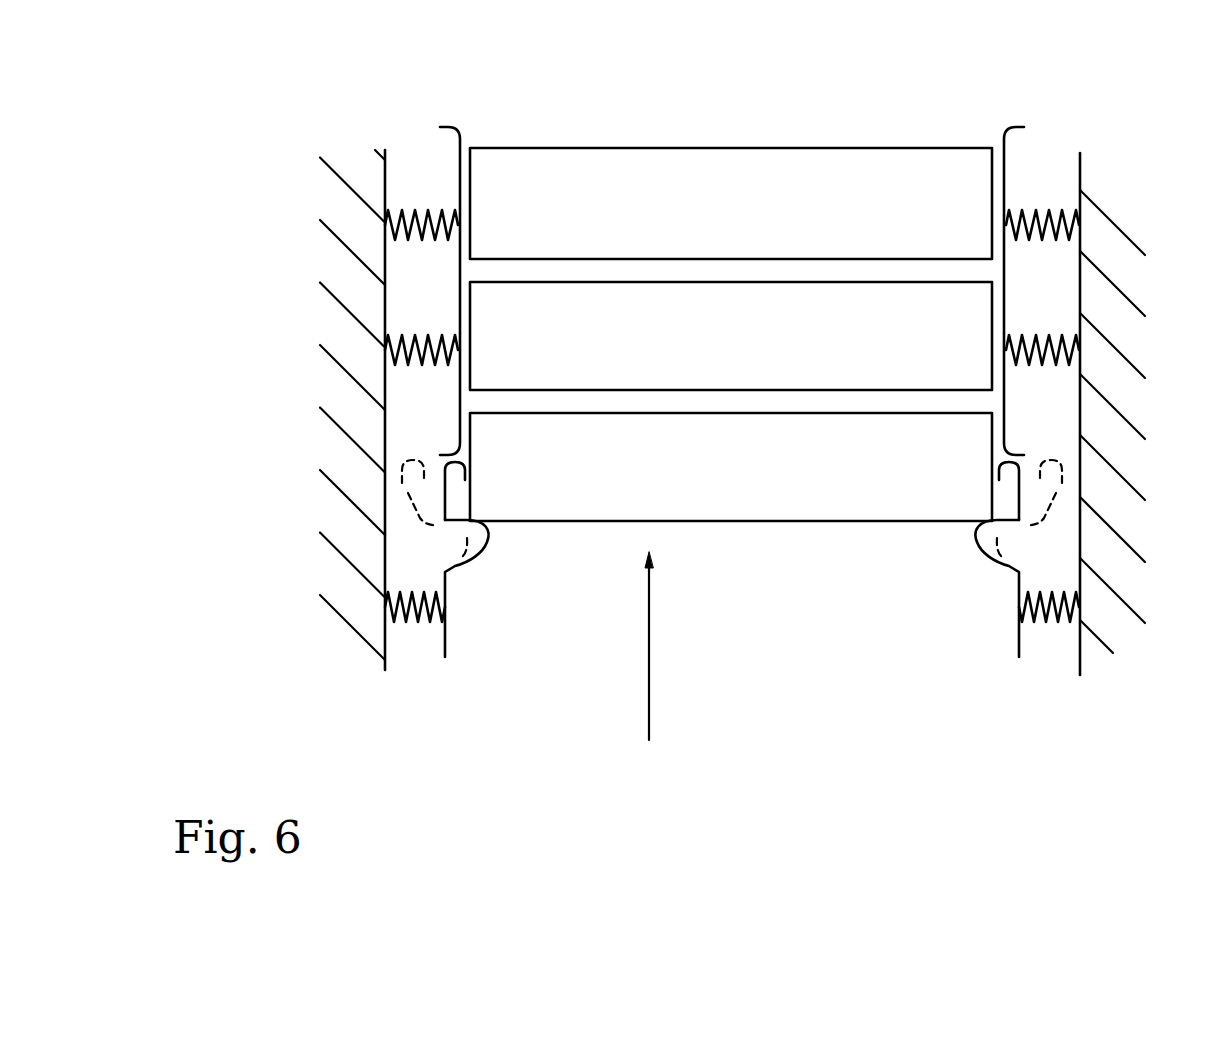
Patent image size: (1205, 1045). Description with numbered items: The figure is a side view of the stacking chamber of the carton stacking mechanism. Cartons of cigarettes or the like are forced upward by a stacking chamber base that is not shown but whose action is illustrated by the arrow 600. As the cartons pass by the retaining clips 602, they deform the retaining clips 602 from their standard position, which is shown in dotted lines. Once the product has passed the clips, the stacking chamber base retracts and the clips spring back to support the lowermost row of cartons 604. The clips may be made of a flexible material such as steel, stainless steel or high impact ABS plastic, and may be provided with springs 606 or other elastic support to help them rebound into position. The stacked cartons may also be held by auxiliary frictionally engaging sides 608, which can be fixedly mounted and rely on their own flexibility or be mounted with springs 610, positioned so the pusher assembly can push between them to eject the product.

The arrow 600 is at (649, 669).
The retaining clips 602 is at (478, 560).
The lowermost row of cartons 604 is at (797, 483).
The springs 606 is at (1045, 623).
The frictionally engaging sides 608 is at (457, 182).
The springs 610 is at (1053, 213).